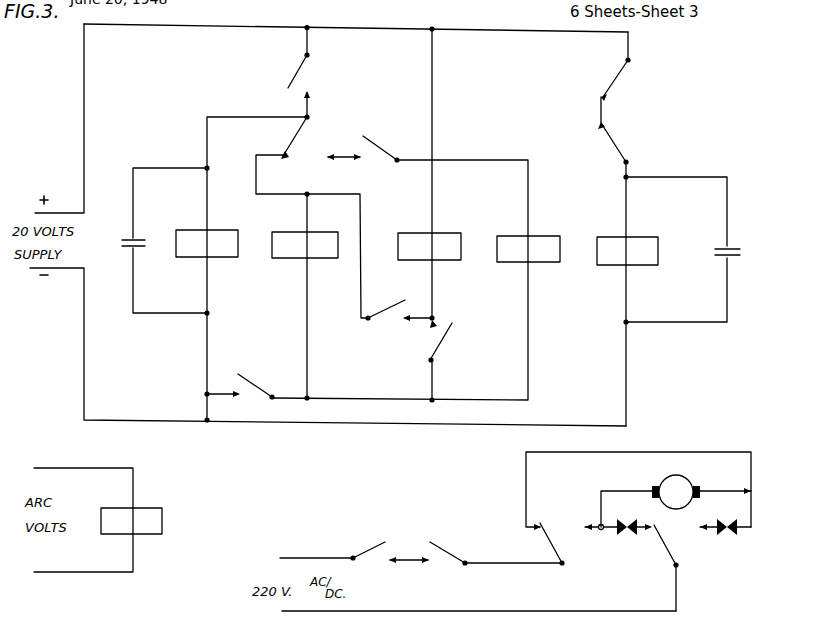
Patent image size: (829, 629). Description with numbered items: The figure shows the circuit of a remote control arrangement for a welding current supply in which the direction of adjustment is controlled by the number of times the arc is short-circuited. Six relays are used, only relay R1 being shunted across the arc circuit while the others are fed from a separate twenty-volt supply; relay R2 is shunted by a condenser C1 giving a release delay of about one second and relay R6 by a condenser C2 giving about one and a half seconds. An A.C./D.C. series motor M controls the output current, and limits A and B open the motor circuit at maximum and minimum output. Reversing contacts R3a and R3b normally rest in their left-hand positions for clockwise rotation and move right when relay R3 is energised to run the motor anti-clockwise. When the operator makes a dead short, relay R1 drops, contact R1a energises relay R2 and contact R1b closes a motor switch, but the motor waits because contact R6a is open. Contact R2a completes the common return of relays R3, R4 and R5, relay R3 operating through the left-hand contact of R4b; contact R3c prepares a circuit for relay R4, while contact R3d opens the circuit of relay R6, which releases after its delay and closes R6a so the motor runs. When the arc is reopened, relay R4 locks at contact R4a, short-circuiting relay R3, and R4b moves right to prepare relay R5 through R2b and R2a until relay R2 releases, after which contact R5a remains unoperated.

The contact of relay R1 R1a is at (315, 72).
The contact of relay R1 R1b is at (243, 534).
The contact of relay R2 R2a is at (248, 384).
The contact of relay R2 R2b is at (295, 196).
The reversing contact of relay R3 R3a is at (511, 399).
The reversing contact of relay R3 R3b is at (673, 567).
The contact of relay R3 R3c is at (399, 303).
The contact of relay R3 R3d is at (631, 66).
The contact of relay R4 R4a is at (452, 341).
The contact of relay R4 R4b is at (371, 188).
The contact of relay R5 R5a is at (576, 179).
The contact of relay R6 R6a is at (523, 401).
The condenser C1 is at (164, 240).
The condenser C2 is at (683, 249).
The limit A is at (611, 517).
The limit B is at (725, 517).
The A.C./D.C. series motor M is at (676, 501).